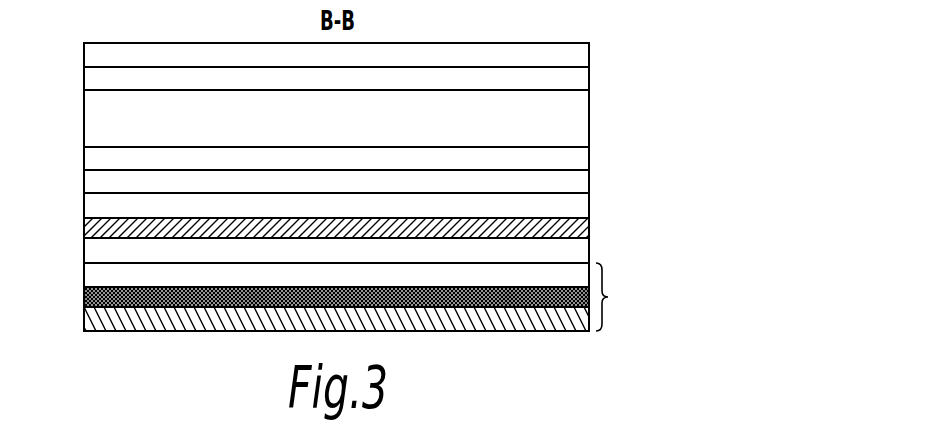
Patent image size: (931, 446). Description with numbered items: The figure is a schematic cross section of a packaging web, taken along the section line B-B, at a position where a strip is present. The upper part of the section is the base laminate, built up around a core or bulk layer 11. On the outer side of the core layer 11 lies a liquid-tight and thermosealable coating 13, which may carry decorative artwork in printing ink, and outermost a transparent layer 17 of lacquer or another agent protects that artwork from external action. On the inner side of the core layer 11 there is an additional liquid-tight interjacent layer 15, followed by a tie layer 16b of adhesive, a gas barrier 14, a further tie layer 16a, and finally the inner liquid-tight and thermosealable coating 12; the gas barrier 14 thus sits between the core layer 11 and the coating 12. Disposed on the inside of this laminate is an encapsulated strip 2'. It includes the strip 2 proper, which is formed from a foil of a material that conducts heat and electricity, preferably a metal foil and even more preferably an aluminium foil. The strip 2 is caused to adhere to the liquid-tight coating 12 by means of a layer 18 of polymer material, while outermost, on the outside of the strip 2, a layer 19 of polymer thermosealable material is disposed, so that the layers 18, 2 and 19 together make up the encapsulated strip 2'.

The transparent layer 17 is at (580, 55).
The liquid-tight and thermosealable coating 13 is at (580, 78).
The core layer 11 is at (580, 115).
The liquid-tight interjacent layer 15 is at (580, 158).
The tie layer 16b is at (580, 182).
The gas barrier 14 is at (580, 207).
The tie layer 16a is at (584, 228).
The liquid-tight and thermosealable coating 12 is at (578, 250).
The layer of polymer material 18 is at (92, 275).
The strip 2 is at (313, 287).
The layer of polymer thermosealable material 19 is at (90, 320).
The encapsulated strip 2' is at (613, 297).